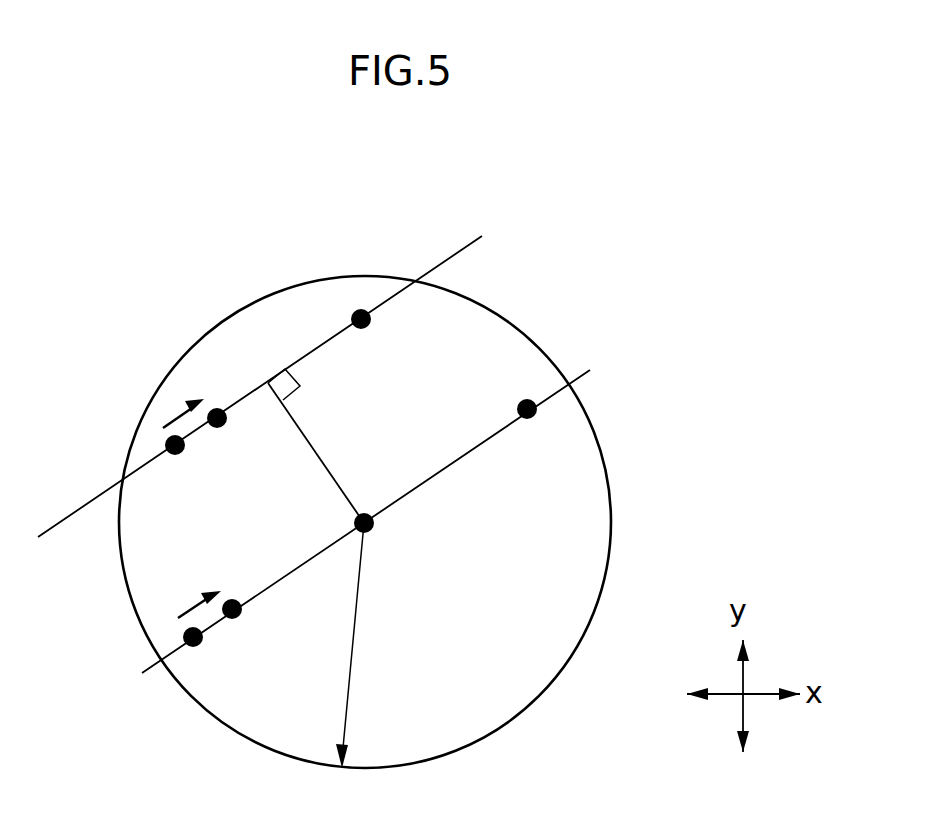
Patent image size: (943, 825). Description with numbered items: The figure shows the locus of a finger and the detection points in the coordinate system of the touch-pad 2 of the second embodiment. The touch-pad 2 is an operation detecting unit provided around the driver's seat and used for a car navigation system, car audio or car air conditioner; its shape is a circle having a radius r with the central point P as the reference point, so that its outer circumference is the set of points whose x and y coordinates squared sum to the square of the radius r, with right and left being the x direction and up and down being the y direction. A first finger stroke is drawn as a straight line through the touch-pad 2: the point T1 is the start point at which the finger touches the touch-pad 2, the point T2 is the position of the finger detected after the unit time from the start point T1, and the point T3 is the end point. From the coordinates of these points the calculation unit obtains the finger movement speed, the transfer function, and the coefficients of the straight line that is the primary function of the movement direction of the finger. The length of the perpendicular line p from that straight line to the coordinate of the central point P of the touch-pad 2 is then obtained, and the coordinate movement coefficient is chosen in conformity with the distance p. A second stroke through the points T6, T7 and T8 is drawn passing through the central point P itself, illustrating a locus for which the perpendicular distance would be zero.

The touch-pad 2 is at (613, 523).
The start point T1 is at (168, 442).
The detected finger position after unit time T2 is at (217, 410).
The end point T3 is at (352, 311).
The point T6 is at (187, 635).
The point T7 is at (232, 620).
The point T8 is at (537, 408).
The central point P is at (374, 523).
The perpendicular line length p is at (316, 446).
The radius r is at (347, 645).